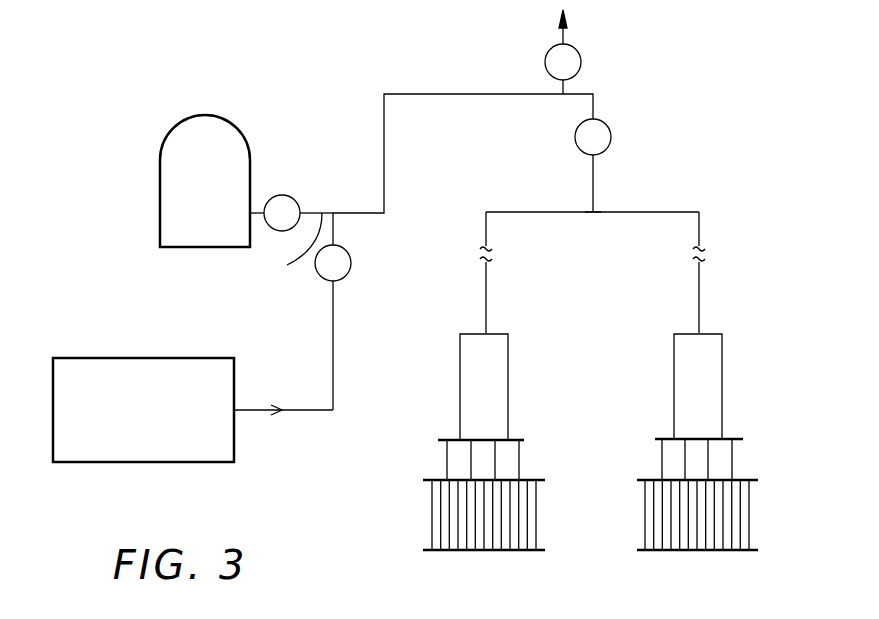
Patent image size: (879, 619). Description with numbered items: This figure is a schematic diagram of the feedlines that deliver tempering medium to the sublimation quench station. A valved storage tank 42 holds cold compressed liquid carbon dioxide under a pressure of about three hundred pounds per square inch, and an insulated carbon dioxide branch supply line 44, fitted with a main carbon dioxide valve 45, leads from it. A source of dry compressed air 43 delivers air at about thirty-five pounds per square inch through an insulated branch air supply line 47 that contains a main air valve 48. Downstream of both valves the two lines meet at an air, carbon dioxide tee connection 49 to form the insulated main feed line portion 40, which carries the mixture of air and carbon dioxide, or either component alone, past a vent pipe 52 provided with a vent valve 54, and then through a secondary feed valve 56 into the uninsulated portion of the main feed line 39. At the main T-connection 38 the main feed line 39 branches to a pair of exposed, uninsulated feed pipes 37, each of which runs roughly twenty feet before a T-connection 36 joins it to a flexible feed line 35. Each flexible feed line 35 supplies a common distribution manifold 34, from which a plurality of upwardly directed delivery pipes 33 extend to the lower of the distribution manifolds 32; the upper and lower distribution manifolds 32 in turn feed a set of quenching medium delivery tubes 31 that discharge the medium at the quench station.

The quenching medium delivery tubes 31 is at (432, 521).
The distribution manifolds 32 is at (525, 480).
The delivery pipes 33 is at (447, 452).
The common distribution manifold 34 is at (492, 439).
The flexible feed lines 35 is at (509, 352).
The T-connection 36 is at (487, 332).
The uninsulated feed pipes 37 is at (513, 211).
The main T-connection 38 is at (593, 213).
The main feed line 39 is at (592, 172).
The insulated main feed line portion 40 is at (423, 93).
The valved storage tank 42 is at (207, 250).
The source of dry compressed air 43 is at (145, 462).
The carbon dioxide branch supply line 44 is at (287, 265).
The main carbon dioxide valve 45 is at (285, 196).
The branch air supply line 47 is at (313, 411).
The main air valve 48 is at (352, 268).
The air, carbon dioxide tee connection 49 is at (337, 216).
The vent pipe 52 is at (567, 36).
The vent valve 54 is at (545, 50).
The secondary feed valve 56 is at (612, 138).